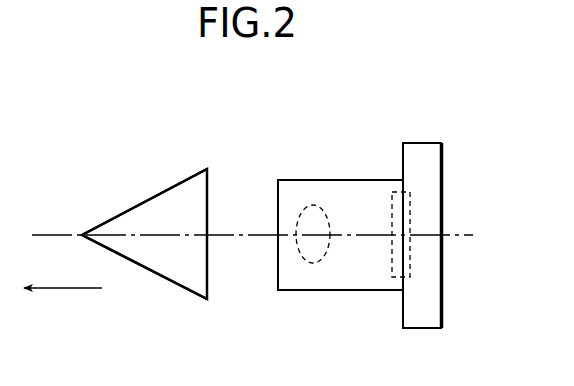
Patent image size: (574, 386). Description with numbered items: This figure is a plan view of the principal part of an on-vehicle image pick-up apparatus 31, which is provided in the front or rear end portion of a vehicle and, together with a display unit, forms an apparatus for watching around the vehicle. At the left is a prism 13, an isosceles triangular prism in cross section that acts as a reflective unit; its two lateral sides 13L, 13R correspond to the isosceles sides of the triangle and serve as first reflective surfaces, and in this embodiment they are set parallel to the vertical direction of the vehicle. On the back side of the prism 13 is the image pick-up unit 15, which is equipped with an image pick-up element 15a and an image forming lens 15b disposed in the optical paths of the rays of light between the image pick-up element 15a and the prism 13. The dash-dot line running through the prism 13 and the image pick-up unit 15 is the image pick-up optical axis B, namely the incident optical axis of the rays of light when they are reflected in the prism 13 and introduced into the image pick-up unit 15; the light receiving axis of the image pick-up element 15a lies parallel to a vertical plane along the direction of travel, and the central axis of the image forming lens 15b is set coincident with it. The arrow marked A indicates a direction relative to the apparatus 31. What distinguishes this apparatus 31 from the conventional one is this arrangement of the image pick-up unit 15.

The prism 13 is at (174, 154).
The lateral side of prism 13R is at (137, 207).
The lateral side of prism 13L is at (148, 277).
The image pick-up unit 15 is at (357, 176).
The image pick-up element 15a is at (392, 278).
The image forming lens 15b is at (313, 264).
The on-vehicle image pick-up apparatus 31 is at (429, 94).
The direction of travel A is at (63, 290).
The image pick-up optical axis B is at (54, 231).